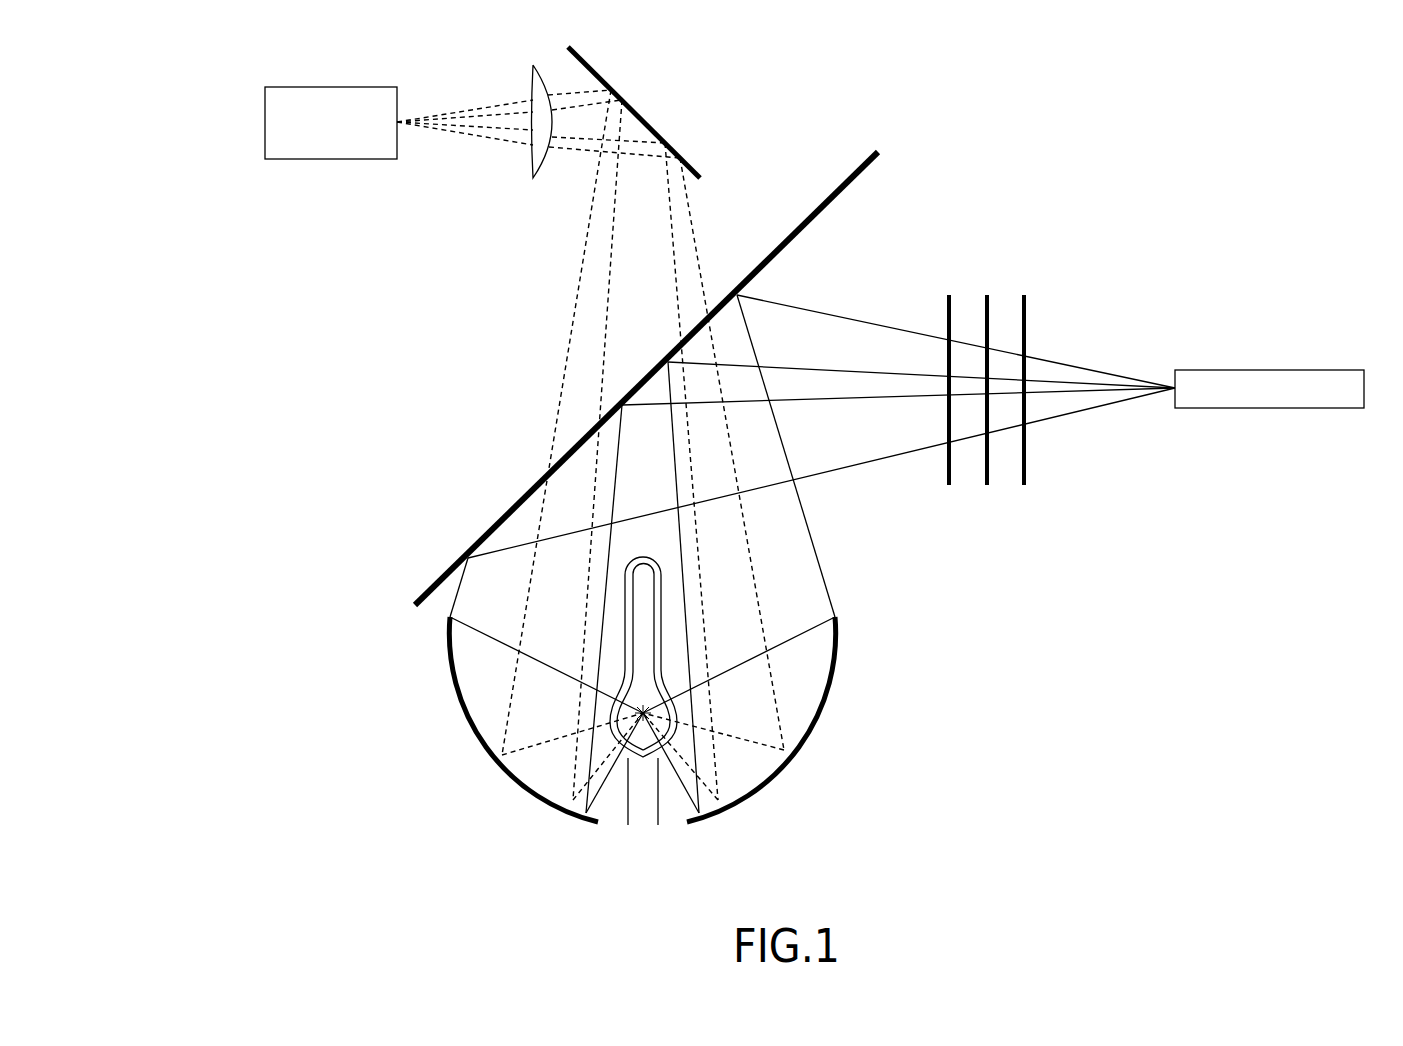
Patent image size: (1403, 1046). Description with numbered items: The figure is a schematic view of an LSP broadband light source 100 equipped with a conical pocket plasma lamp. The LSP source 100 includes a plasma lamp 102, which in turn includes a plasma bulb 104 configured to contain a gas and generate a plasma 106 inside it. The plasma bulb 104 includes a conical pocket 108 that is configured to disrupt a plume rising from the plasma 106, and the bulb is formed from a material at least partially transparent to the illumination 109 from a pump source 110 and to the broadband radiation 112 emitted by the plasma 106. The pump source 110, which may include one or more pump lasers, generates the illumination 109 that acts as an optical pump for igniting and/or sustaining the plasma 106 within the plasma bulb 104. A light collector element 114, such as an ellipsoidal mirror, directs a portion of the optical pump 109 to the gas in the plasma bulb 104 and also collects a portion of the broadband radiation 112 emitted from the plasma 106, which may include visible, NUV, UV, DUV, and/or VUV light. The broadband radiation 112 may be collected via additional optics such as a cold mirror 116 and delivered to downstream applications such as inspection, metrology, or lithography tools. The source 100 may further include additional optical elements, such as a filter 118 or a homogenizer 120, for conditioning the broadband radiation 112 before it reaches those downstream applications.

The LSP broadband light source 100 is at (185, 70).
The plasma lamp 102 is at (596, 631).
The plasma bulb 104 is at (641, 711).
The plasma 106 is at (651, 708).
The conical pocket 108 is at (643, 628).
The illumination 109 is at (592, 252).
The pump source 110 is at (350, 137).
The broadband radiation 112 is at (832, 320).
The light collector element 114 is at (467, 708).
The cold mirror 116 is at (823, 197).
The filter 118 is at (1027, 457).
The homogenizer 120 is at (1272, 377).